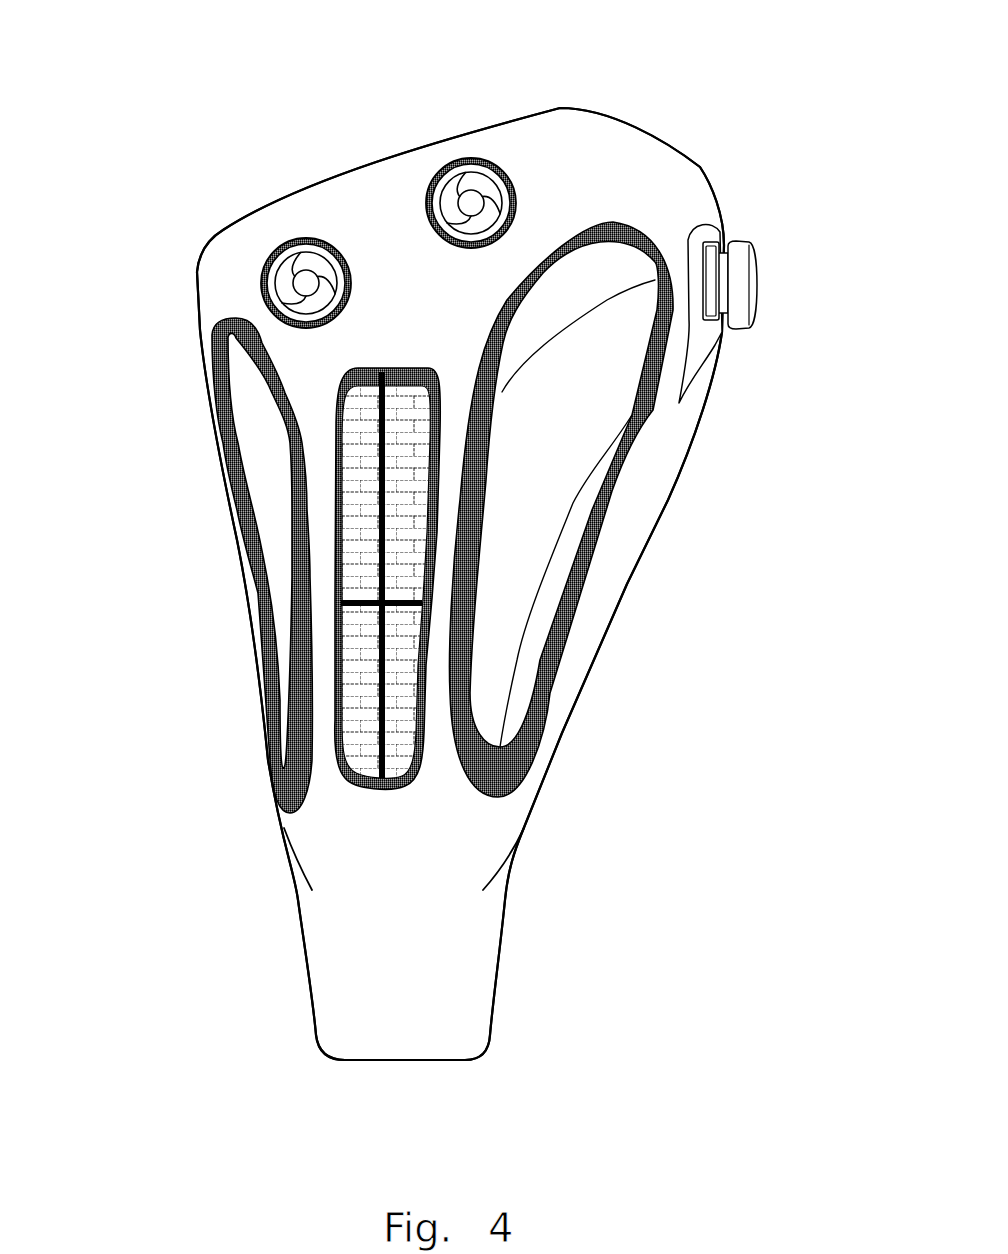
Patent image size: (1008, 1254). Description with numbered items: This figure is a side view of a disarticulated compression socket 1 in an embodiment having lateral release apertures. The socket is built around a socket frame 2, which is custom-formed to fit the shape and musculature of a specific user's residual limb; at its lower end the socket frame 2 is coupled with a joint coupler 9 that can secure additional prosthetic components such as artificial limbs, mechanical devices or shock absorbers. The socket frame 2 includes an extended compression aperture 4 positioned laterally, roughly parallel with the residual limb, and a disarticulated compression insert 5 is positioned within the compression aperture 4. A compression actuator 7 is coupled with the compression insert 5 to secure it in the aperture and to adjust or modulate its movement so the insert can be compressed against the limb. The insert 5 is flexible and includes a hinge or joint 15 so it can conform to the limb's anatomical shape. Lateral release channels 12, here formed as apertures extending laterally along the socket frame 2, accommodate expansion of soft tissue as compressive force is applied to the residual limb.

The disarticulated compression socket 1 is at (738, 107).
The socket frame 2 is at (377, 205).
The compression aperture 4 is at (405, 397).
The disarticulated compression insert 5 is at (378, 677).
The compression actuator 7 is at (470, 188).
The joint coupler 9 is at (375, 1061).
The lateral release channel 12 is at (282, 538).
The hinge or joint 15 is at (422, 603).